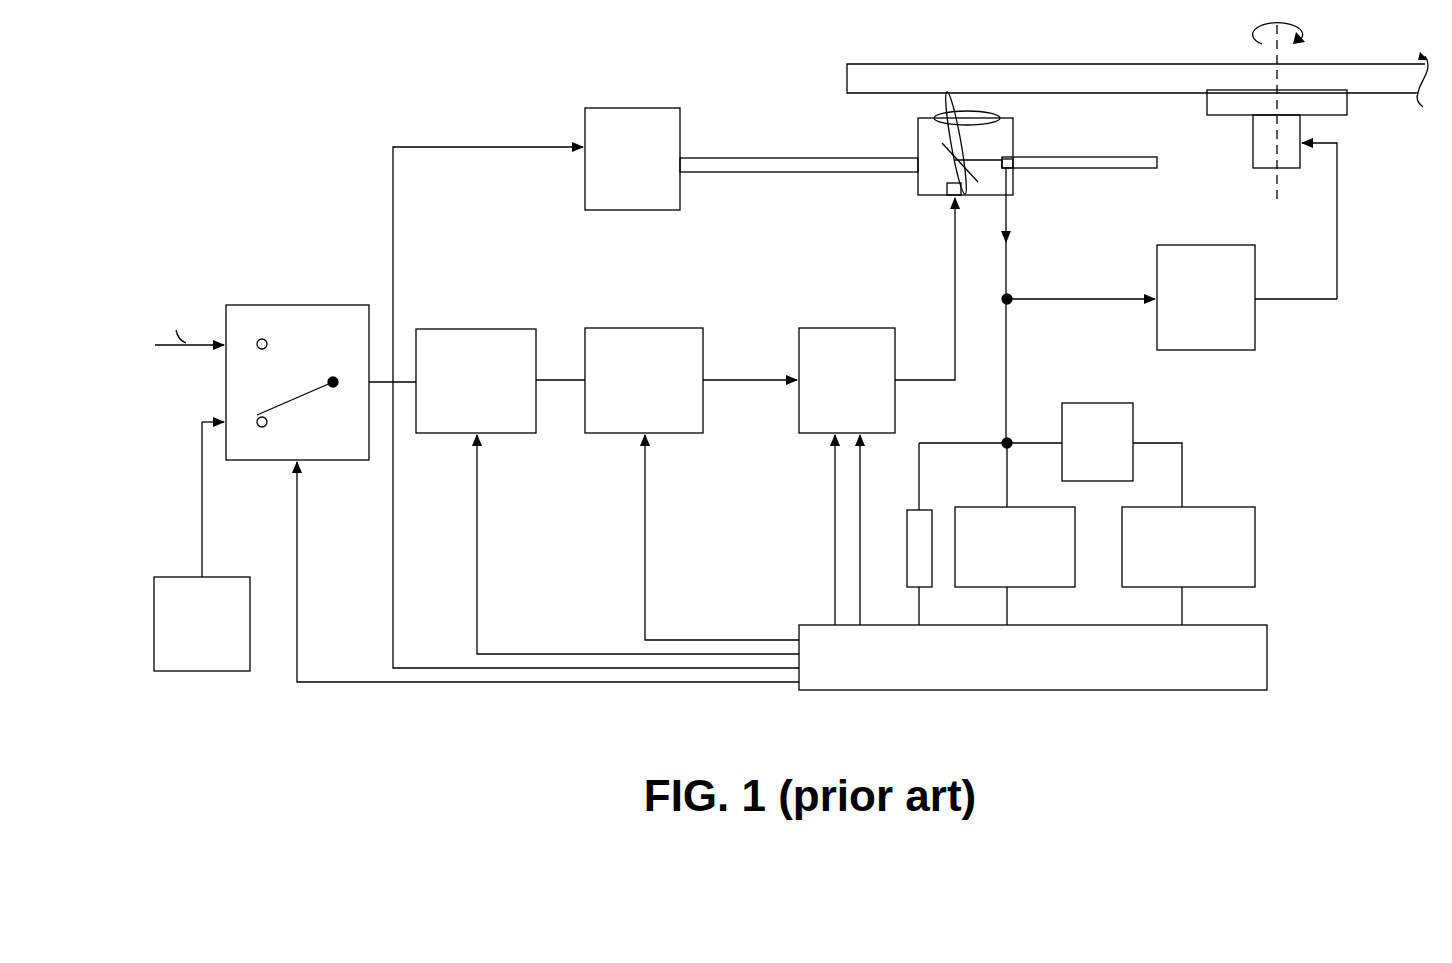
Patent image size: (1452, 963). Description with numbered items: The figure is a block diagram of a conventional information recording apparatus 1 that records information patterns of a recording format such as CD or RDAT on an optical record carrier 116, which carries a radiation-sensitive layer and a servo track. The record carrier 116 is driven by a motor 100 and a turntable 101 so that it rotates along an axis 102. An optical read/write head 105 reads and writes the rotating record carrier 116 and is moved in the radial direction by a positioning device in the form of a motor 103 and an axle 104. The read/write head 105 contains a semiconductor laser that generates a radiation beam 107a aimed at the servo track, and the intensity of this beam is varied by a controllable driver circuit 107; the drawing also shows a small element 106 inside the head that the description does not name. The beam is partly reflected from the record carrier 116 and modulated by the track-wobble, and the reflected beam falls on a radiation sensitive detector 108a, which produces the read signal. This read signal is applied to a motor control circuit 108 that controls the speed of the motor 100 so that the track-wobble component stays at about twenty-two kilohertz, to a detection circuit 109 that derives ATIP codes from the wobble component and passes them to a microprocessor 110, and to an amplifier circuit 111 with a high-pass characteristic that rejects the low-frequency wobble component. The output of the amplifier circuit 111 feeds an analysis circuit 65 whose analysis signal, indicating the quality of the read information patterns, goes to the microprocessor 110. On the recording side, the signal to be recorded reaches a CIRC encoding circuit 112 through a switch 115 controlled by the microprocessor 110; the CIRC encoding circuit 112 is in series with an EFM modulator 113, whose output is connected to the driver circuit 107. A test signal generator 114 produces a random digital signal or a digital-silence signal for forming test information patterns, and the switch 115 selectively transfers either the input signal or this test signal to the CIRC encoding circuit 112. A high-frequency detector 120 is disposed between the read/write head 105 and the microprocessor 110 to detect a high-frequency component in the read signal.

The information recording apparatus 1 is at (488, 97).
The analysis circuit 65 is at (1250, 532).
The motor 100 is at (1290, 128).
The turntable 101 is at (1217, 102).
The axis 102 is at (1282, 52).
The motor 103 is at (597, 178).
The axle 104 is at (1117, 163).
The optical read/write head 105 is at (1013, 127).
The photodetector 106 is at (950, 196).
The driver circuit 107 is at (883, 405).
The radiation beam 107a is at (965, 94).
The motor control circuit 108 is at (1247, 330).
The radiation sensitive detector 108a is at (1010, 178).
The detection circuit 109 is at (1025, 578).
The microprocessor 110 is at (1078, 692).
The amplifier circuit 111 is at (1108, 416).
The CIRC encoding circuit 112 is at (463, 343).
The EFM modulator 113 is at (633, 338).
The test signal generator 114 is at (225, 590).
The switch 115 is at (282, 310).
The optical record carrier 116 is at (1113, 72).
The high-frequency detector 120 is at (919, 500).